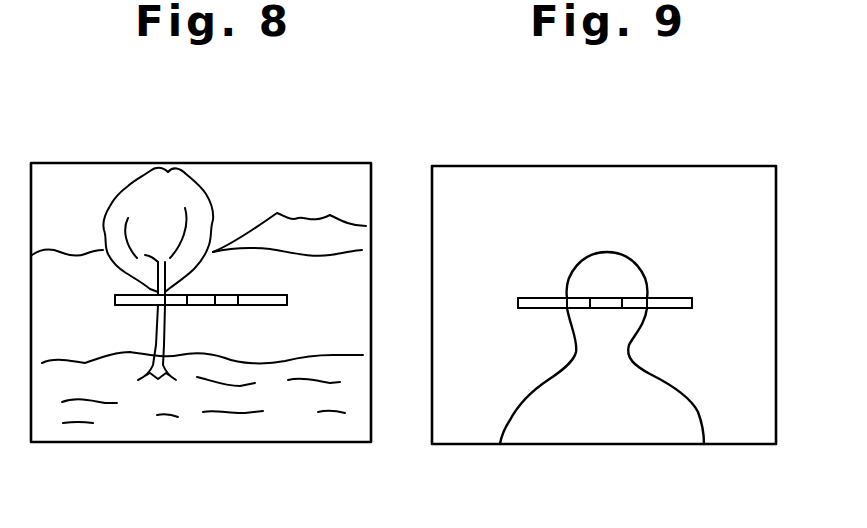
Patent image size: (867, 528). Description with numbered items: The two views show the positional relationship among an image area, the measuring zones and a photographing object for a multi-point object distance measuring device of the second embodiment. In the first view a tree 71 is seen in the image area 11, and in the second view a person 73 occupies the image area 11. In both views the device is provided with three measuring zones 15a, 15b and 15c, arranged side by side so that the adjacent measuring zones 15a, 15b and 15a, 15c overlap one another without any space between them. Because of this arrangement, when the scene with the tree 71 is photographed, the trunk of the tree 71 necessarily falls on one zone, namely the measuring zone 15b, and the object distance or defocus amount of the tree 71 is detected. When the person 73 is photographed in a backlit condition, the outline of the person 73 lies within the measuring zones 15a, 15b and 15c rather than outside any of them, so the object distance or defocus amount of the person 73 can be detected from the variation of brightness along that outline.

In FIG. 8, the image area 11 is at (349, 163).
In FIG. 9, the image area 11 is at (717, 166).
In FIG. 8, the tree 71 is at (168, 196).
In FIG. 9, the person 73 is at (610, 264).
In FIG. 8, the measuring zone 15a is at (205, 305).
In FIG. 9, the measuring zone 15a is at (607, 308).
In FIG. 8, the measuring zone 15b is at (143, 305).
In FIG. 9, the measuring zone 15b is at (538, 308).
In FIG. 8, the measuring zone 15c is at (267, 305).
In FIG. 9, the measuring zone 15c is at (670, 308).